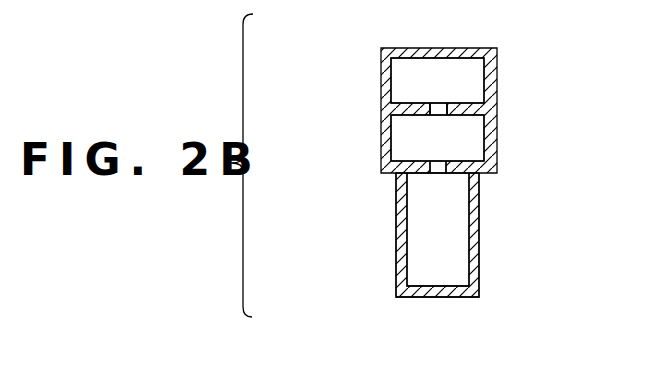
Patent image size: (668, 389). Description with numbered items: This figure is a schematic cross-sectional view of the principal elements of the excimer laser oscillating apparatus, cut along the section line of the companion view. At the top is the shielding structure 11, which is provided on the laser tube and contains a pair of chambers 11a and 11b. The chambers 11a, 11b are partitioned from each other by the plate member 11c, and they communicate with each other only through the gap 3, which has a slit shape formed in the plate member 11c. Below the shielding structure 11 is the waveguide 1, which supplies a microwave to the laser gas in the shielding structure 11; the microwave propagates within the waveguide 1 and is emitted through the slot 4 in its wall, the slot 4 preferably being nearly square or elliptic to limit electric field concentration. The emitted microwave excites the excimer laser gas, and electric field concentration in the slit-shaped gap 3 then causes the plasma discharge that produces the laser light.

The shielding structure 11 is at (330, 86).
The waveguide 1 is at (479, 264).
The chamber 11a is at (477, 93).
The chamber 11b is at (472, 152).
The plate member 11c is at (442, 108).
The gap 3 is at (441, 108).
The slot 4 is at (442, 172).